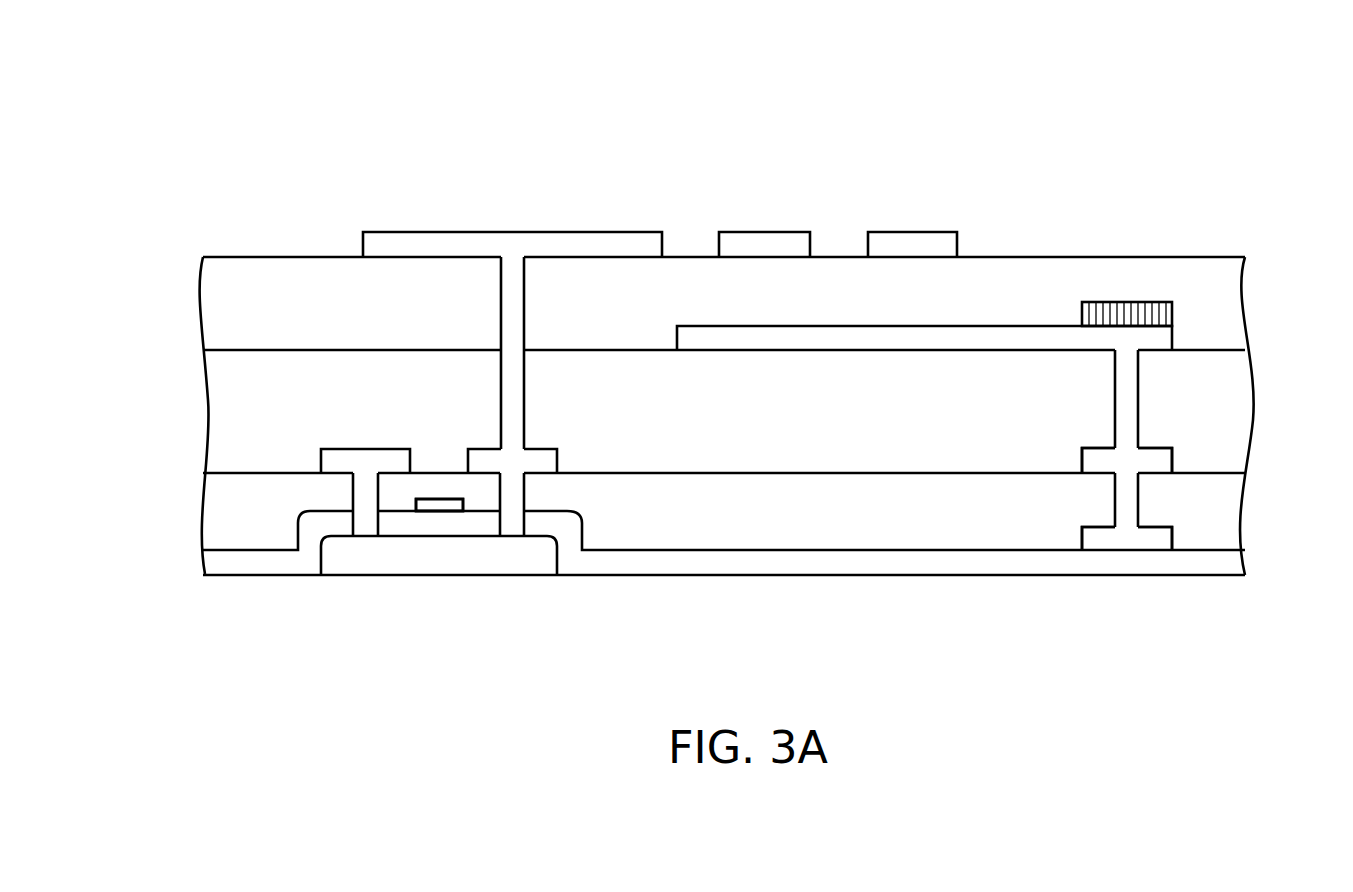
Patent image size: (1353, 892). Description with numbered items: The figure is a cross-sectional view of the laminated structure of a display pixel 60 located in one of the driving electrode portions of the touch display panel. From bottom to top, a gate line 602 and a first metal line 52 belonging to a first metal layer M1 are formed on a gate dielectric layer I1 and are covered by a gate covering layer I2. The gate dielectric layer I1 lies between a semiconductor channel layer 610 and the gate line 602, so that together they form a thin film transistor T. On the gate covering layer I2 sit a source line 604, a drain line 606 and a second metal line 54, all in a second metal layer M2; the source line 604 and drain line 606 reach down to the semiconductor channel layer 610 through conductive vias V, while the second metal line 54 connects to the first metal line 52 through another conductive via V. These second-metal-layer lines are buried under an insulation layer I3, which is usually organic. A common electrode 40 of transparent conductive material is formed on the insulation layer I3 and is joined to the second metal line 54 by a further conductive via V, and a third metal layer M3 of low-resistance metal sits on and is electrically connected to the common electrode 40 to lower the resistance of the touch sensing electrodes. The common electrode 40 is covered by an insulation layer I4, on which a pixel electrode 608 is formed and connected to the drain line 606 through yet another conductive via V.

The display pixel 60 is at (115, 111).
The pixel electrode 608 is at (620, 247).
The conductive via V is at (512, 297).
The insulation layer I4 is at (1018, 277).
The third metal layer M3 is at (1178, 311).
The common electrode 40 is at (1130, 339).
The second metal line 54 is at (1158, 462).
The second metal layer M2 is at (1178, 460).
The first metal layer M1 is at (1178, 528).
The first metal line 52 is at (1125, 542).
The drain line 606 is at (494, 459).
The source line 604 is at (373, 458).
The semiconductor channel layer 610 is at (345, 554).
The thin film transistor T is at (557, 583).
The gate line 602 is at (433, 505).
The gate dielectric layer I1 is at (772, 563).
The gate covering layer I2 is at (832, 527).
The insulation layer I3 is at (891, 453).